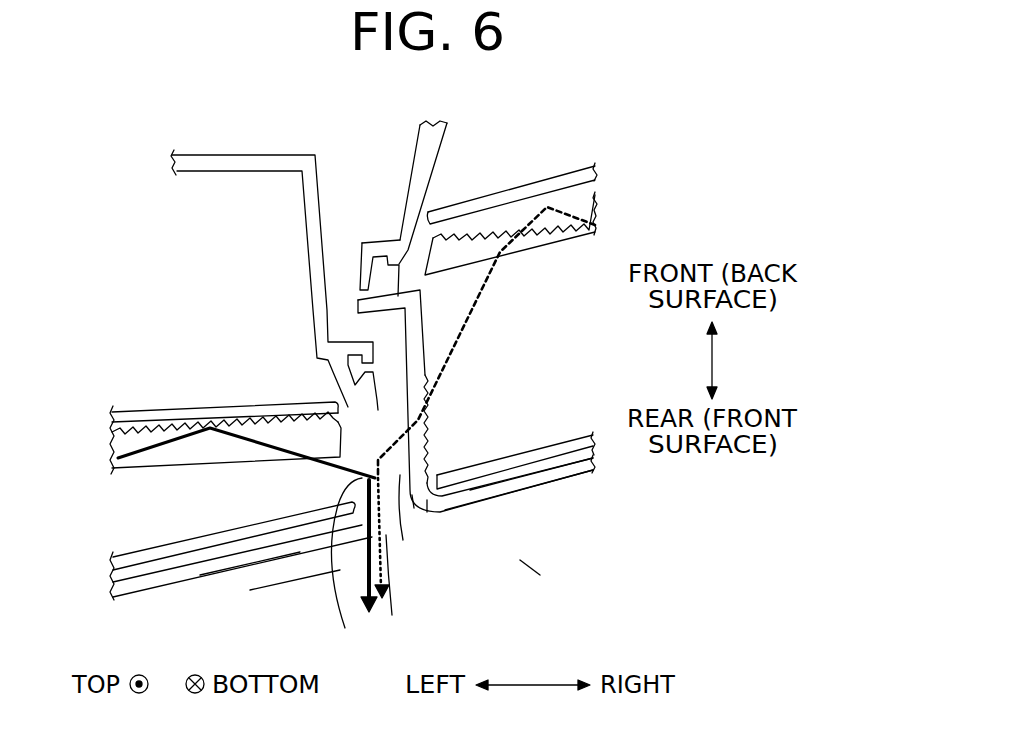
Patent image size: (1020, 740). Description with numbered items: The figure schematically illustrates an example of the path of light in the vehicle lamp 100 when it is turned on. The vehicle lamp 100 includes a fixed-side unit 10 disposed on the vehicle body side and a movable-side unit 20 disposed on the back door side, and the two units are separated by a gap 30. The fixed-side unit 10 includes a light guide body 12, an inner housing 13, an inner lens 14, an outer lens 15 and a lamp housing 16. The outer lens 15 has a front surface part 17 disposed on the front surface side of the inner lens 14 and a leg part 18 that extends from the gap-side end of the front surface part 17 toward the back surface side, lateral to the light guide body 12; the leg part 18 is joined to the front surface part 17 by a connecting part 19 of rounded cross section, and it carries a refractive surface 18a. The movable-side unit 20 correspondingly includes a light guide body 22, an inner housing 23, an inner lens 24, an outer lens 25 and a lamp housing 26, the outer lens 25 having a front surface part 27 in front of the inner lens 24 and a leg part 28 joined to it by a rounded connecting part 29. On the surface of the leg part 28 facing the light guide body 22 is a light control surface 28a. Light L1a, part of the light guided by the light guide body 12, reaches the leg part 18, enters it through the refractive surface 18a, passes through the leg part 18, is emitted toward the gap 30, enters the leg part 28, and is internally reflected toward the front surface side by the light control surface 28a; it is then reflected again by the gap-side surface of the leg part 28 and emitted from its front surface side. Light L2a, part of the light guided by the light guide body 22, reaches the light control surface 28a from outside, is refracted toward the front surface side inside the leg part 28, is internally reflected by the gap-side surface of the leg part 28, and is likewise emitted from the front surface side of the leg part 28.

The fixed-side unit 10 is at (503, 518).
The light guide body 12 is at (498, 222).
The inner housing 13 is at (533, 195).
The inner lens 14 is at (545, 474).
The outer lens 15 is at (432, 520).
The lamp housing 16 is at (410, 150).
The front surface part 17 is at (575, 490).
The leg part 18 is at (432, 338).
The refractive surface 18a is at (438, 433).
The connecting part 19 is at (427, 522).
The movable-side unit 20 is at (313, 566).
The light guide body 22 is at (281, 437).
The inner housing 23 is at (186, 412).
The inner lens 24 is at (230, 540).
The outer lens 25 is at (190, 577).
The lamp housing 26 is at (248, 158).
The front surface part 27 is at (281, 565).
The leg part 28 is at (380, 530).
The light control surface 28a is at (347, 560).
The connecting part 29 is at (395, 586).
The gap 30 is at (413, 522).
The vehicle lamp 100 is at (556, 582).
The light L1a is at (472, 292).
The light L2a is at (138, 455).